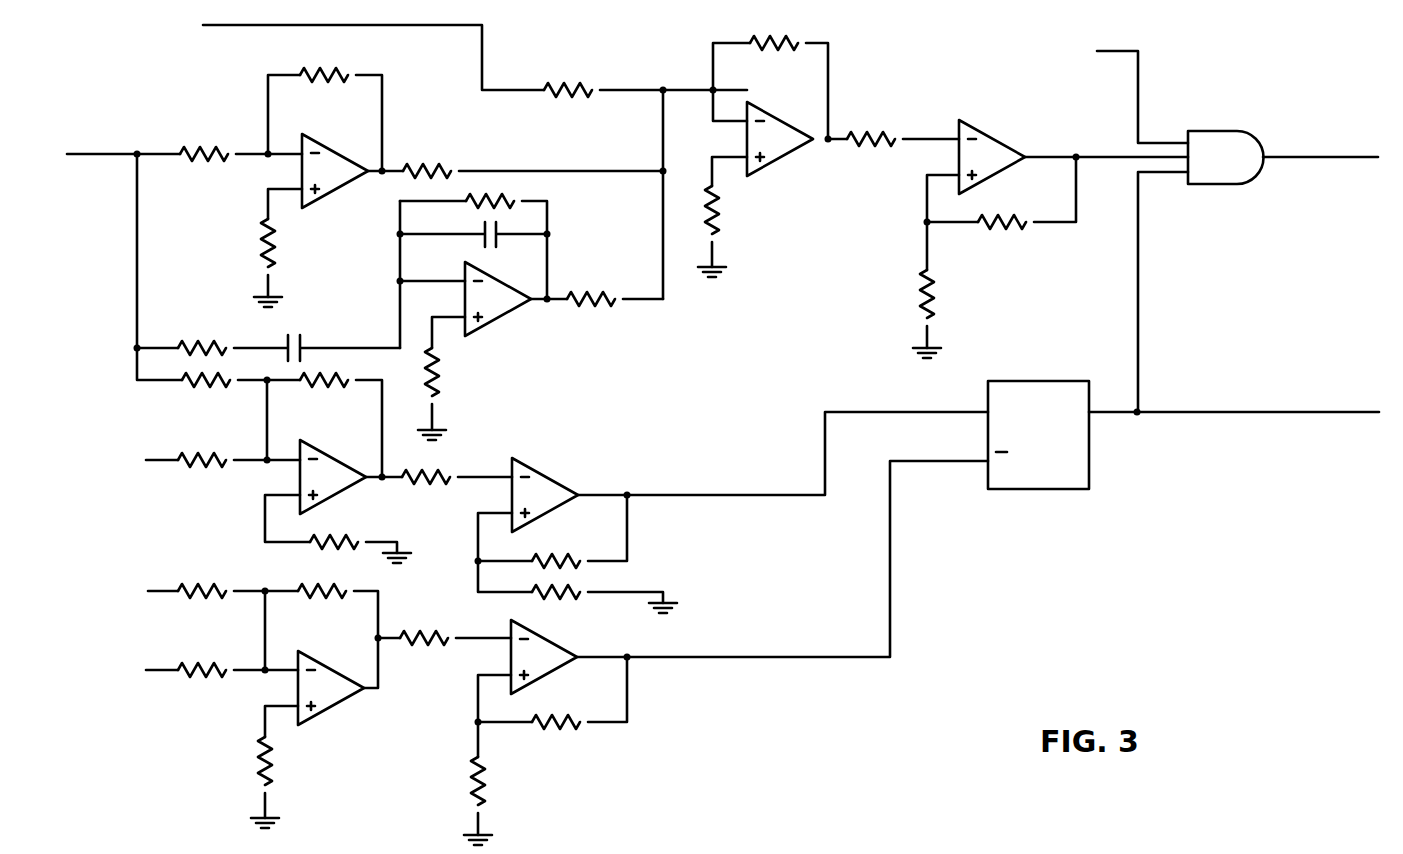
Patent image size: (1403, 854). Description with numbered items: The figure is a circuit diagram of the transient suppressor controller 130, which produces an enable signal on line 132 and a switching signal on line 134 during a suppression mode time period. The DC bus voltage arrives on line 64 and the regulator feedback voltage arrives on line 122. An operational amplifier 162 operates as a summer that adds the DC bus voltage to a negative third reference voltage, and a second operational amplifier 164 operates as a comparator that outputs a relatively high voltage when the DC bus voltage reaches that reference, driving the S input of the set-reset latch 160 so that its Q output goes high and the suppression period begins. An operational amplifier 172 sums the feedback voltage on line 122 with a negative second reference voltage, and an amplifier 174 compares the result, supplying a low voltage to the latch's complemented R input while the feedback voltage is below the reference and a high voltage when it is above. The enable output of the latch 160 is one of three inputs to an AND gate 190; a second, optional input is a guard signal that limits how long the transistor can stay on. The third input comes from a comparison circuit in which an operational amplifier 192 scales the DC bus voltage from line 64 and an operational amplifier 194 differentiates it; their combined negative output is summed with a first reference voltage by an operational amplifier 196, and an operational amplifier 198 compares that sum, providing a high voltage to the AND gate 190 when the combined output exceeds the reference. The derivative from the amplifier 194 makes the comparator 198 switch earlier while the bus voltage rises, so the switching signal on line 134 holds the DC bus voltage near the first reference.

The line 64 is at (78, 156).
The line 122 is at (157, 589).
The transient suppressor controller 130 is at (701, 394).
The line 132 is at (1138, 303).
The line 134 is at (1338, 160).
The set-reset latch 160 is at (1057, 489).
The operational amplifier 162 is at (337, 498).
The operational amplifier 164 is at (546, 474).
The operational amplifier 172 is at (327, 712).
The amplifier 174 is at (541, 633).
The AND gate 190 is at (1243, 131).
The operational amplifier 192 is at (330, 192).
The operational amplifier 194 is at (498, 318).
The operational amplifier 196 is at (790, 152).
The operational amplifier 198 is at (993, 137).